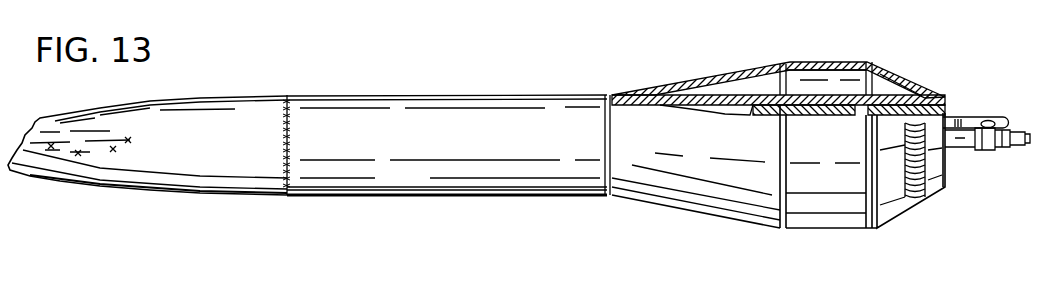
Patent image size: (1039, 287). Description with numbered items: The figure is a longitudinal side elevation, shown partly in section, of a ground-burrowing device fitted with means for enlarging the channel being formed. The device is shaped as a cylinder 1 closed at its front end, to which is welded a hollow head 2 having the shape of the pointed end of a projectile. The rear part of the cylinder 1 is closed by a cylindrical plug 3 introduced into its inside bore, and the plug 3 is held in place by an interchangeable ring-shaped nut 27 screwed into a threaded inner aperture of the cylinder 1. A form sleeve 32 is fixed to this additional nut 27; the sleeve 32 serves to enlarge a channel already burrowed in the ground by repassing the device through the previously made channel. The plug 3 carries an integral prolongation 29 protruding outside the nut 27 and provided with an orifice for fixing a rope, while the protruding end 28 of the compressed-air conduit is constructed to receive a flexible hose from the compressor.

The cylinder 1 is at (432, 125).
The hollow head 2 is at (175, 115).
The cylindrical plug 3 is at (848, 70).
The ring nut 27 is at (953, 73).
The protruding end 28 is at (985, 150).
The prolongation 29 is at (965, 117).
The form sleeve 32 is at (797, 37).